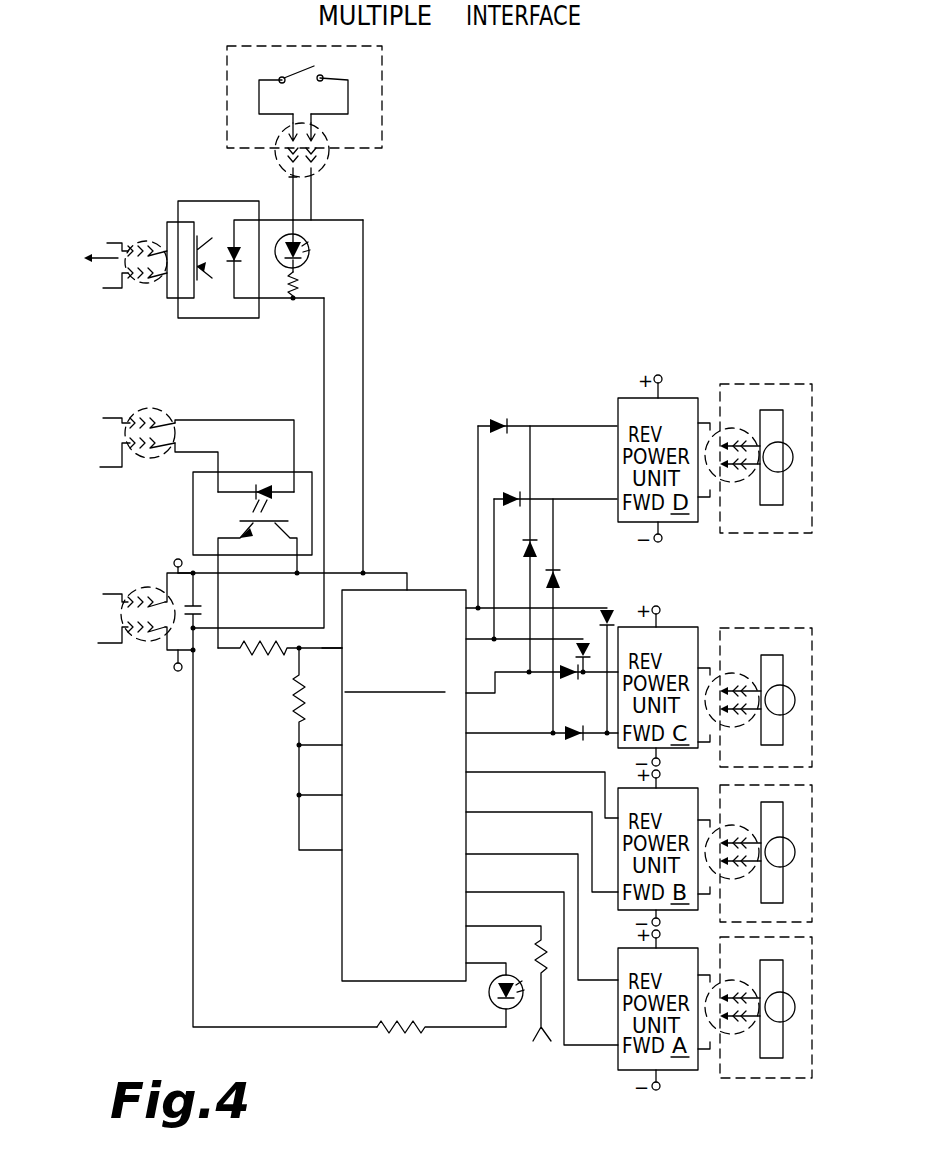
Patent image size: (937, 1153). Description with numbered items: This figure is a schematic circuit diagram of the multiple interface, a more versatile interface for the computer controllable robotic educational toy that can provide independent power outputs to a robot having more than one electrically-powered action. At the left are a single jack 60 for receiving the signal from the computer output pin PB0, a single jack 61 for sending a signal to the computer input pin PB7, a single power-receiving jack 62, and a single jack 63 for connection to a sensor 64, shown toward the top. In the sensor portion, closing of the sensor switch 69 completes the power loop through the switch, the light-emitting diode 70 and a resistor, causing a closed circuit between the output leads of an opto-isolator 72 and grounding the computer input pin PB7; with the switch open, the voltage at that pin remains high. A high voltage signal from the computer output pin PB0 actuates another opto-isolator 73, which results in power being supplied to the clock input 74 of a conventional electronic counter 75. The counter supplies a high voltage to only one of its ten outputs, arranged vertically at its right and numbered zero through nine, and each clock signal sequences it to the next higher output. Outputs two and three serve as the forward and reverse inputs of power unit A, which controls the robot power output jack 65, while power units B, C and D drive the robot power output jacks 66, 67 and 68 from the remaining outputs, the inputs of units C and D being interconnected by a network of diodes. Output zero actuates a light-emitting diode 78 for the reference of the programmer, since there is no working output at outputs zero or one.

The jack 60 is at (158, 412).
The jack 61 is at (140, 240).
The power-receiving jack 62 is at (134, 592).
The jack 63 is at (330, 170).
The sensor 64 is at (382, 115).
The robot power output jack 65 is at (748, 1034).
The robot power output jack 66 is at (748, 879).
The robot power output jack 67 is at (748, 727).
The robot power output jack 68 is at (748, 482).
The sensor switch 69 is at (322, 74).
The light-emitting diode 70 is at (310, 240).
The opto-isolator 72 is at (219, 201).
The opto-isolator 73 is at (302, 472).
The clock input 74 is at (322, 648).
The electronic counter 75 is at (437, 590).
The light-emitting diode 78 is at (506, 1010).